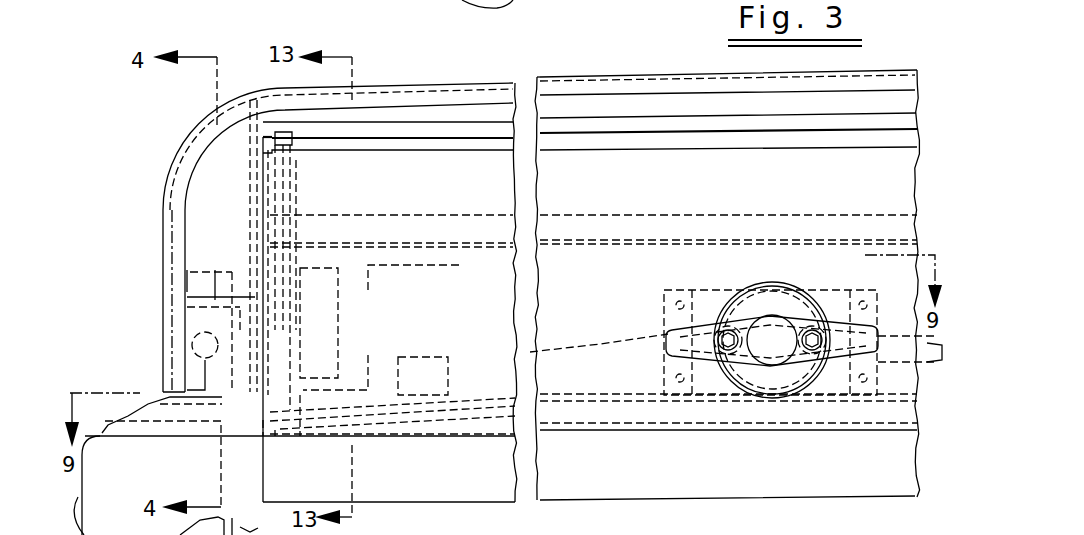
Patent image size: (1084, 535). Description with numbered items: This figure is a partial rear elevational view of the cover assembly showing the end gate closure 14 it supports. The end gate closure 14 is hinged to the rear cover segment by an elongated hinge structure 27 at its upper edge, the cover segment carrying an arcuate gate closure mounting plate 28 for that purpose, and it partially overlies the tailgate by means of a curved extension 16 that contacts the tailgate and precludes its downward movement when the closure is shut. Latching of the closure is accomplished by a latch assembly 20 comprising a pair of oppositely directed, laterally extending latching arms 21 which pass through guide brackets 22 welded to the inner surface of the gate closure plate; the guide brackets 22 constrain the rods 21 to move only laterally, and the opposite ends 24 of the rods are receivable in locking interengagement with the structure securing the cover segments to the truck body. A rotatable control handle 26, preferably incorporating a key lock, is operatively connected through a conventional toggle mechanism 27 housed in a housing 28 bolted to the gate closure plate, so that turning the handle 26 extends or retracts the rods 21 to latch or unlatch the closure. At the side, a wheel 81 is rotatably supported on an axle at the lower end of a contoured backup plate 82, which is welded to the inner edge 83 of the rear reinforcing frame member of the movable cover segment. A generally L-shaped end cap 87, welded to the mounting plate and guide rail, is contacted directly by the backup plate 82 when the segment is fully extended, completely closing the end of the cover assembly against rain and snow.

The end gate closure 14 is at (679, 182).
The curved extension 16 is at (627, 476).
The pulley assembly 20 is at (695, 225).
The latching arms 21 is at (356, 440).
The guide brackets 22 is at (426, 357).
The opposite ends 24 is at (283, 450).
The control handle 26 is at (700, 373).
The toggle mechanism 27 is at (546, 56).
The housing 28 is at (821, 290).
The wheels 81 is at (240, 310).
The backup plate 82 is at (228, 198).
The inner edge 83 is at (182, 176).
The end cap 87 is at (168, 413).